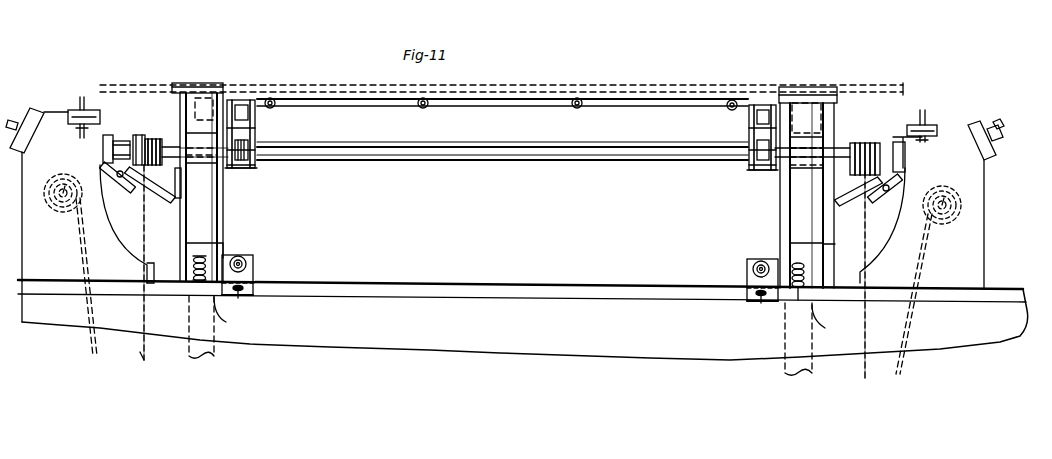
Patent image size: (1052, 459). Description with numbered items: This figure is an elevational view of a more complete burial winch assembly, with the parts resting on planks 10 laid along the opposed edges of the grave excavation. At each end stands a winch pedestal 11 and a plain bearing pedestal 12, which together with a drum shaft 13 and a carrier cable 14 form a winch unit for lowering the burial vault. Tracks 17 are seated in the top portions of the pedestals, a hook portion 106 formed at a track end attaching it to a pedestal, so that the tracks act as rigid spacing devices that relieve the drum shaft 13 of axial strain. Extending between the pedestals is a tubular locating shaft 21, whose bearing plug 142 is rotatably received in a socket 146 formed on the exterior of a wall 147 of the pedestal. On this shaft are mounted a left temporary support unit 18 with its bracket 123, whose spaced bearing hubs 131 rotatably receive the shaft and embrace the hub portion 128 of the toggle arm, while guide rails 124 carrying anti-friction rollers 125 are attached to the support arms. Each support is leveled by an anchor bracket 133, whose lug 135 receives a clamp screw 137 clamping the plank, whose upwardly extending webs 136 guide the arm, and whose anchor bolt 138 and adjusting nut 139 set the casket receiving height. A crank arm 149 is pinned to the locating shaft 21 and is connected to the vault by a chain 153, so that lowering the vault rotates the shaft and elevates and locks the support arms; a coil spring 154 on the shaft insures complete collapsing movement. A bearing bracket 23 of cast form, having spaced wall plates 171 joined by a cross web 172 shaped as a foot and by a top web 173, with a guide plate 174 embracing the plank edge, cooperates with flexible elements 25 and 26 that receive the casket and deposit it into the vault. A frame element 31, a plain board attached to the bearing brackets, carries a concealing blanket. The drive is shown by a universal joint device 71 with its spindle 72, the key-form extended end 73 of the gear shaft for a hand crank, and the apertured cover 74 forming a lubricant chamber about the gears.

The planks 10 is at (350, 290).
The winch pedestal 11 is at (28, 112).
The plain bearing pedestal 12 is at (46, 125).
The drum shaft 13 is at (60, 217).
The carrier cables 14 is at (93, 345).
The tracks 17 is at (82, 97).
The left temporary support unit 18 is at (265, 141).
The locating shaft 21 is at (416, 162).
The bearing bracket 23 is at (180, 231).
The flexible element 25 is at (205, 203).
The flexible element 26 is at (792, 203).
The frame element 31 is at (328, 85).
The universal joint device 71 is at (128, 192).
The spindle 72 is at (172, 204).
The extended end of shaft 73 is at (1004, 125).
The cover 74 is at (1002, 136).
The hook portion 106 is at (77, 127).
The bracket 123 is at (258, 119).
The guide rails 124 is at (358, 108).
The anti-friction rollers 125 is at (270, 98).
The hub portion 128 is at (234, 170).
The bearing hubs 131 is at (258, 160).
The anchor bracket 133 is at (254, 267).
The lug 135 is at (254, 285).
The webs 136 is at (247, 259).
The clamp screw 137 is at (240, 298).
The anchor bolt 138 is at (245, 260).
The adjusting nut 139 is at (238, 256).
The bearing plug 142 is at (142, 136).
The socket 146 is at (115, 141).
The wall 147 is at (106, 135).
The crank arm 149 is at (160, 135).
The chain 153 is at (144, 352).
The coil spring 154 is at (878, 143).
The wall plates 171 is at (180, 183).
The cross web 172 is at (195, 250).
The web 173 is at (193, 110).
The guide plate 174 is at (225, 323).